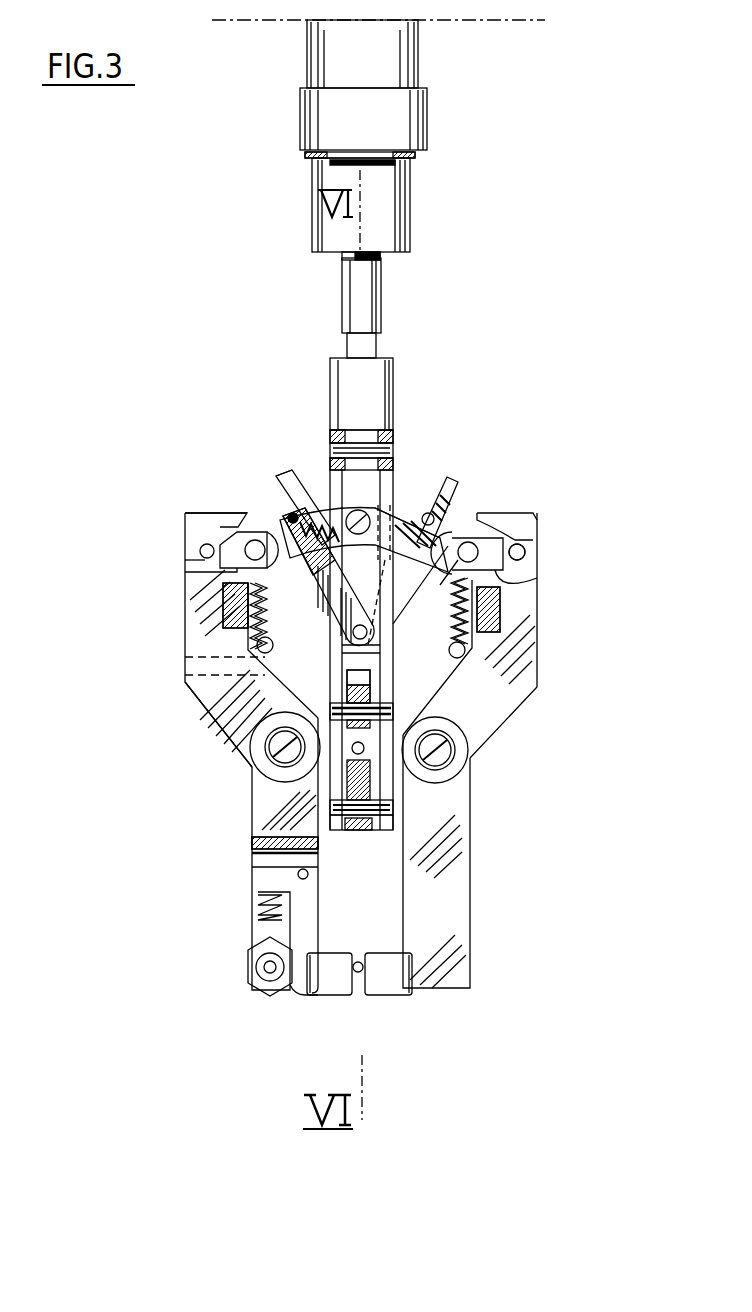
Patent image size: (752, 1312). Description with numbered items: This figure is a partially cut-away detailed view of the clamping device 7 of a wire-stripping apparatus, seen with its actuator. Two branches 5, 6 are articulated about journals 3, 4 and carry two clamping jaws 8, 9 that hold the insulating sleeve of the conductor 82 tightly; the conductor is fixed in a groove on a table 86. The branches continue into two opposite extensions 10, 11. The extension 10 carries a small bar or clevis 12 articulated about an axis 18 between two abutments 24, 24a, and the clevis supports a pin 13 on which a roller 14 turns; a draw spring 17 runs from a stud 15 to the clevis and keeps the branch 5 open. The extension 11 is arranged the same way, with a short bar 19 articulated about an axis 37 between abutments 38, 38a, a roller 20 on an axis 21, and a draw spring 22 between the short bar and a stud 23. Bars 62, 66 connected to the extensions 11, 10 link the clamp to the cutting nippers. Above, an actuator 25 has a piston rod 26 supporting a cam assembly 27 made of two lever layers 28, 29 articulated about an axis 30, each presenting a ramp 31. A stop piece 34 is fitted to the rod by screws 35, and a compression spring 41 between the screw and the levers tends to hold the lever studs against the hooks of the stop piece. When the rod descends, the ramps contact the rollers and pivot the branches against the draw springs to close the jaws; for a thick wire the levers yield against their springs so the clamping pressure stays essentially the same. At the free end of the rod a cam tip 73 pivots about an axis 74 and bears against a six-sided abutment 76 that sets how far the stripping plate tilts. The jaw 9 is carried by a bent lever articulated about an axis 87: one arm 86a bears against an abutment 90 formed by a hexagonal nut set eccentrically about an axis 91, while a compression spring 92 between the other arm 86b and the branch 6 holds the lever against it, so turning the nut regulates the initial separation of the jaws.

The journal 3 is at (447, 755).
The journal 4 is at (270, 737).
The branch 5 is at (453, 908).
The branch 6 is at (265, 812).
The clamping device 7 is at (201, 714).
The clamping jaw 8 is at (372, 985).
The clamping jaw 9 is at (345, 983).
The extension 10 is at (520, 652).
The extension 11 is at (195, 633).
The small bar or clevis 12 is at (500, 560).
The pin 13 is at (478, 552).
The roller 14 is at (530, 540).
The stud 15 is at (452, 655).
The draw spring 17 is at (456, 605).
The axis 18 is at (525, 552).
The short bar or clevis 19 is at (228, 548).
The roller 20 is at (240, 530).
The axis 21 is at (255, 550).
The draw spring 22 is at (276, 616).
The stud 23 is at (273, 647).
The abutment 24 is at (520, 590).
The abutment 24a is at (540, 535).
The actuator 25 is at (413, 133).
The piston rod 26 is at (393, 371).
The cam assembly 27 is at (468, 509).
The lever layer 28 is at (428, 500).
The lever layer 29 is at (330, 622).
The axis 30 is at (362, 640).
The ramp 31 is at (285, 482).
The stop piece 34 is at (410, 525).
The screw 35 is at (358, 510).
The axis 37 is at (220, 555).
The abutment 38 is at (238, 573).
The abutment 38a is at (215, 521).
The compression spring 41 is at (307, 493).
The bar 62 is at (228, 600).
The bar 66 is at (500, 605).
The tip 73 is at (380, 785).
The axis 74 is at (357, 830).
The abutment 76 is at (347, 678).
The conductor 82 is at (360, 962).
The table 86 is at (258, 875).
The arm 86a is at (290, 990).
The arm 86b is at (250, 866).
The axis 87 is at (308, 875).
The abutment 90 is at (255, 983).
The axis 91 is at (262, 968).
The compression spring 92 is at (262, 900).